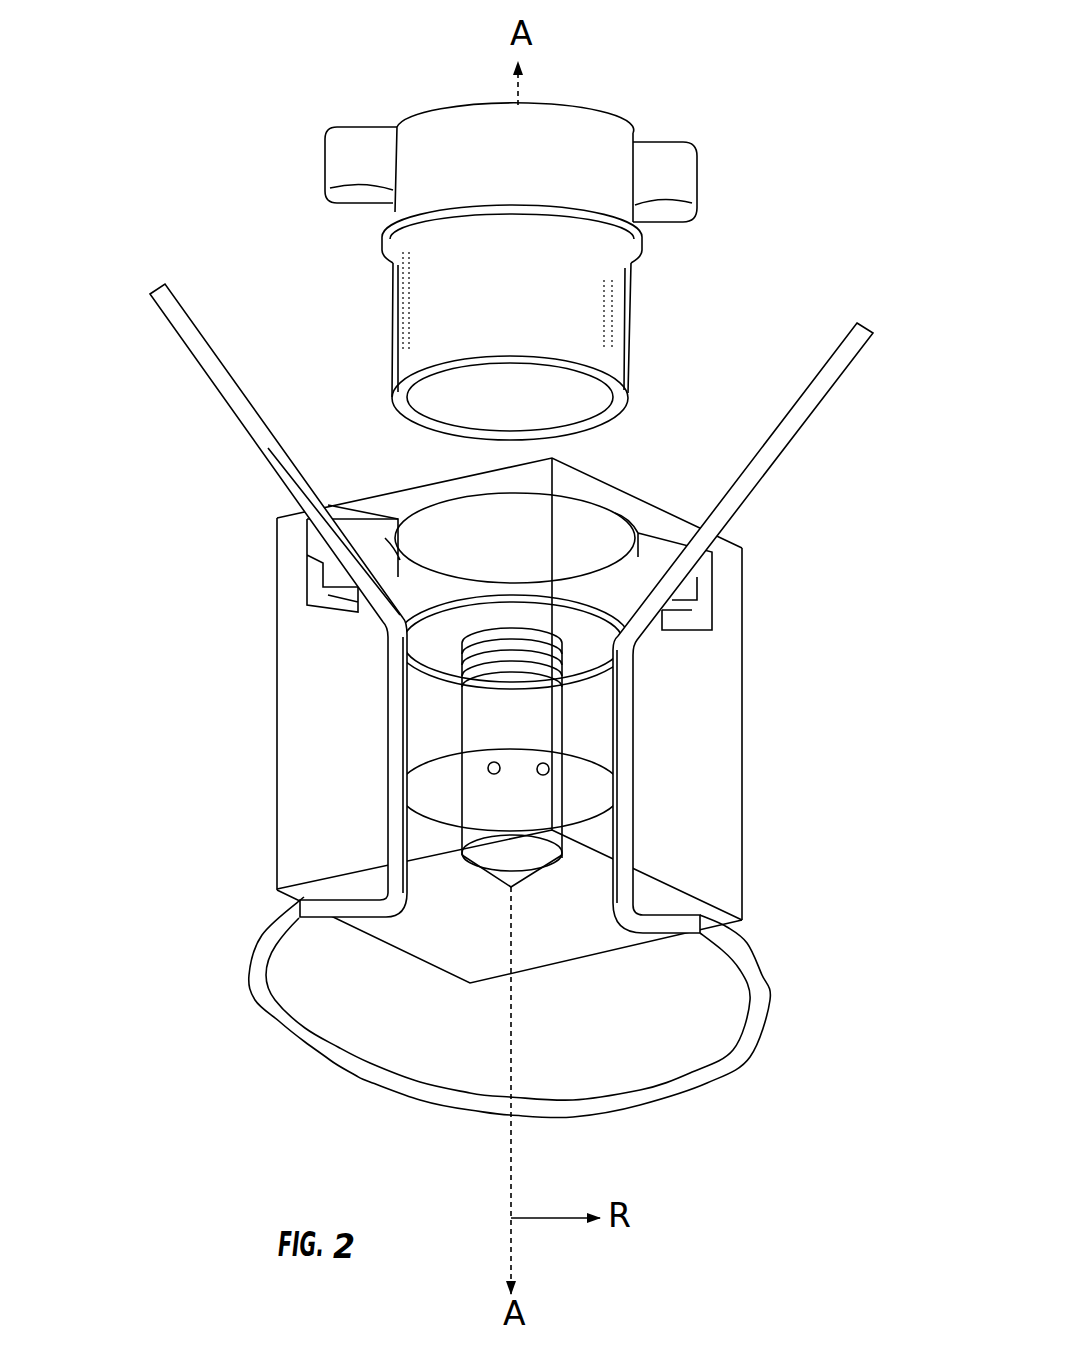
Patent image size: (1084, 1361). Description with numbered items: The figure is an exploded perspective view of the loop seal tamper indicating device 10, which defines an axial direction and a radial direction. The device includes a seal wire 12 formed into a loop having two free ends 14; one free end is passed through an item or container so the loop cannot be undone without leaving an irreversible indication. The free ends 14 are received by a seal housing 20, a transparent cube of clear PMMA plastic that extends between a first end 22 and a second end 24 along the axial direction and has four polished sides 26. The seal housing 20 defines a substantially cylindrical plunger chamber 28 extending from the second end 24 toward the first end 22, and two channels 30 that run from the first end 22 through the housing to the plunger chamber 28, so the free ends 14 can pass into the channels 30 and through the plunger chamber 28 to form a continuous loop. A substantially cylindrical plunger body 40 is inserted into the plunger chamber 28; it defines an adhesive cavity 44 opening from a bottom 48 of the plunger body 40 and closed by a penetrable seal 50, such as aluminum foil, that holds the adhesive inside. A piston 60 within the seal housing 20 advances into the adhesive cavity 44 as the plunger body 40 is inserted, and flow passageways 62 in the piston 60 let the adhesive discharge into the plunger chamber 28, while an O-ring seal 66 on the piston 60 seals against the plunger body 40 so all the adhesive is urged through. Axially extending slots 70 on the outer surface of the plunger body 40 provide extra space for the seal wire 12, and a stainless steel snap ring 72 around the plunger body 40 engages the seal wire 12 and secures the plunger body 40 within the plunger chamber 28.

The loop seal tamper indicating device 10 is at (868, 90).
The seal wire 12 is at (763, 1030).
The free ends 14 is at (158, 312).
The seal housing 20 is at (730, 781).
The first end 22 is at (584, 946).
The second end 24 is at (681, 517).
The sides 26 is at (317, 745).
The plunger chamber 28 is at (587, 746).
The channels 30 is at (625, 839).
The plunger body 40 is at (534, 128).
The adhesive cavity 44 is at (528, 284).
The bottom 48 is at (441, 432).
The penetrable seal 50 is at (540, 392).
The piston 60 is at (480, 713).
The flow passageways 62 is at (523, 783).
The O-ring seal 66 is at (478, 658).
The axially extending slots 70 is at (386, 350).
The snap ring 72 is at (383, 245).